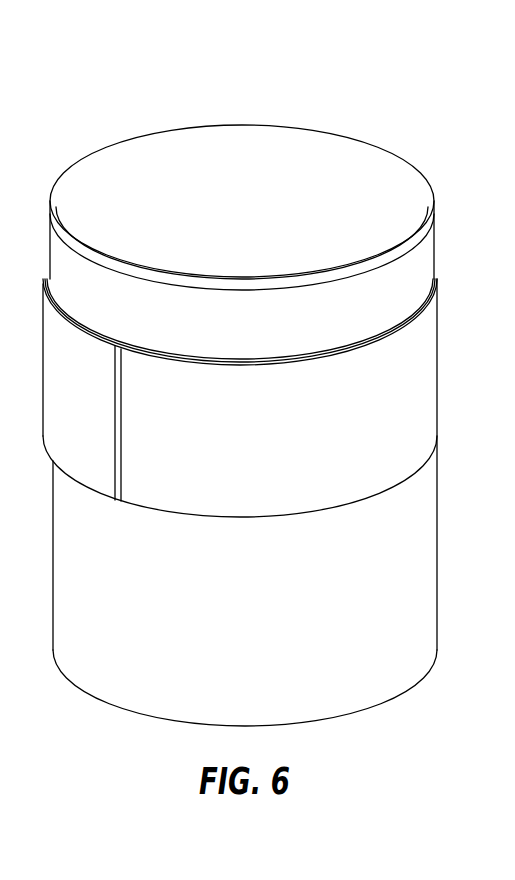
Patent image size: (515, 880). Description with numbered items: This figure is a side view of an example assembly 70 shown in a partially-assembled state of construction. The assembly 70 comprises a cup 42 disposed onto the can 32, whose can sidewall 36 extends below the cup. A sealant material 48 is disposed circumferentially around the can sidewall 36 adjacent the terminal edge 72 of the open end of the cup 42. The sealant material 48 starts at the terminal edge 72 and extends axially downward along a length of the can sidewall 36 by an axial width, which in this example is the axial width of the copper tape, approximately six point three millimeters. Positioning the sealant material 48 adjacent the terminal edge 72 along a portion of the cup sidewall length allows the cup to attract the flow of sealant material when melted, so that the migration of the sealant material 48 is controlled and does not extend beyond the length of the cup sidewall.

The assembly 70 is at (420, 109).
The cup 42 is at (411, 215).
The terminal edge 72 is at (400, 331).
The sealant material 48 is at (408, 403).
The container 32 is at (399, 536).
The can sidewall 36 is at (418, 605).